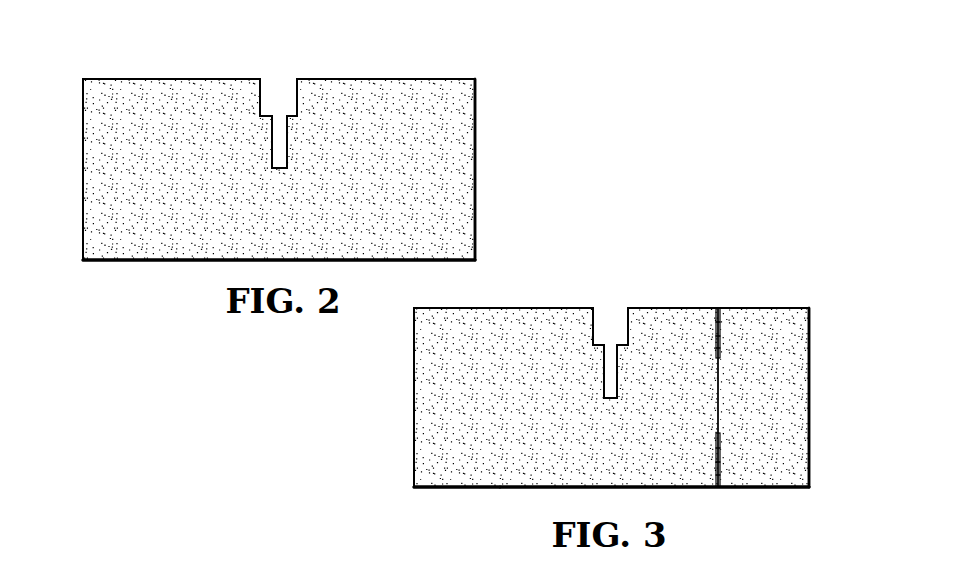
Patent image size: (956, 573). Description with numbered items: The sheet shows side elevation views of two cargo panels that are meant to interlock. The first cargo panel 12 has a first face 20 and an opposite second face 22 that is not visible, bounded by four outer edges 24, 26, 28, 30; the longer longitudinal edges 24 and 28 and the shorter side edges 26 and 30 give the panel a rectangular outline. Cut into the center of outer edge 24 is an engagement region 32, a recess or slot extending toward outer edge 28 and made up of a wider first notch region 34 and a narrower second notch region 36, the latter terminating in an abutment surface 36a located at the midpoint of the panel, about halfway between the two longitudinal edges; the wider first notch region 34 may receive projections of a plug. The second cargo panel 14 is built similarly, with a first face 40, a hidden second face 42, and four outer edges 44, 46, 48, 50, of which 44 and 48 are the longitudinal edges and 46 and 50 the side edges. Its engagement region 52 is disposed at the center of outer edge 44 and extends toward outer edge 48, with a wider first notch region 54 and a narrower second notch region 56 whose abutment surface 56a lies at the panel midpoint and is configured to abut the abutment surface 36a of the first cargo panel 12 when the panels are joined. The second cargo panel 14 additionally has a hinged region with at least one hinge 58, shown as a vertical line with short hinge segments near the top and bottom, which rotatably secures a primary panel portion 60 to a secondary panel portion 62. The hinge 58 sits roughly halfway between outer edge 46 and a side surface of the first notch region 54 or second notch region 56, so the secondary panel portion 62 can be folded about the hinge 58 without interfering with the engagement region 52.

In FIG. 2, the first cargo panel 12 is at (427, 50).
In FIG. 2, the first face 20 is at (100, 133).
In FIG. 2, the second face 22 is at (100, 183).
In FIG. 2, the outer edge 24 is at (167, 79).
In FIG. 2, the outer edge 26 is at (475, 165).
In FIG. 2, the outer edge 28 is at (178, 261).
In FIG. 2, the outer edge 30 is at (100, 236).
In FIG. 2, the engagement region 32 is at (283, 58).
In FIG. 2, the first notch region 34 is at (297, 96).
In FIG. 2, the second notch region 36 is at (287, 146).
In FIG. 2, the abutment surface 36a is at (279, 162).
In FIG. 3, the second cargo panel 14 is at (722, 259).
In FIG. 3, the first face 40 is at (414, 367).
In FIG. 3, the second face 42 is at (414, 417).
In FIG. 3, the outer edge 44 is at (518, 308).
In FIG. 3, the outer edge 46 is at (809, 382).
In FIG. 3, the outer edge 48 is at (470, 488).
In FIG. 3, the outer edge 50 is at (414, 470).
In FIG. 3, the engagement region 52 is at (615, 290).
In FIG. 3, the first notch region 54 is at (630, 325).
In FIG. 3, the second notch region 56 is at (620, 373).
In FIG. 3, the abutment surface 56a is at (612, 395).
In FIG. 3, the hinge 58 is at (722, 328).
In FIG. 3, the primary panel portion 60 is at (548, 473).
In FIG. 3, the secondary panel portion 62 is at (765, 398).